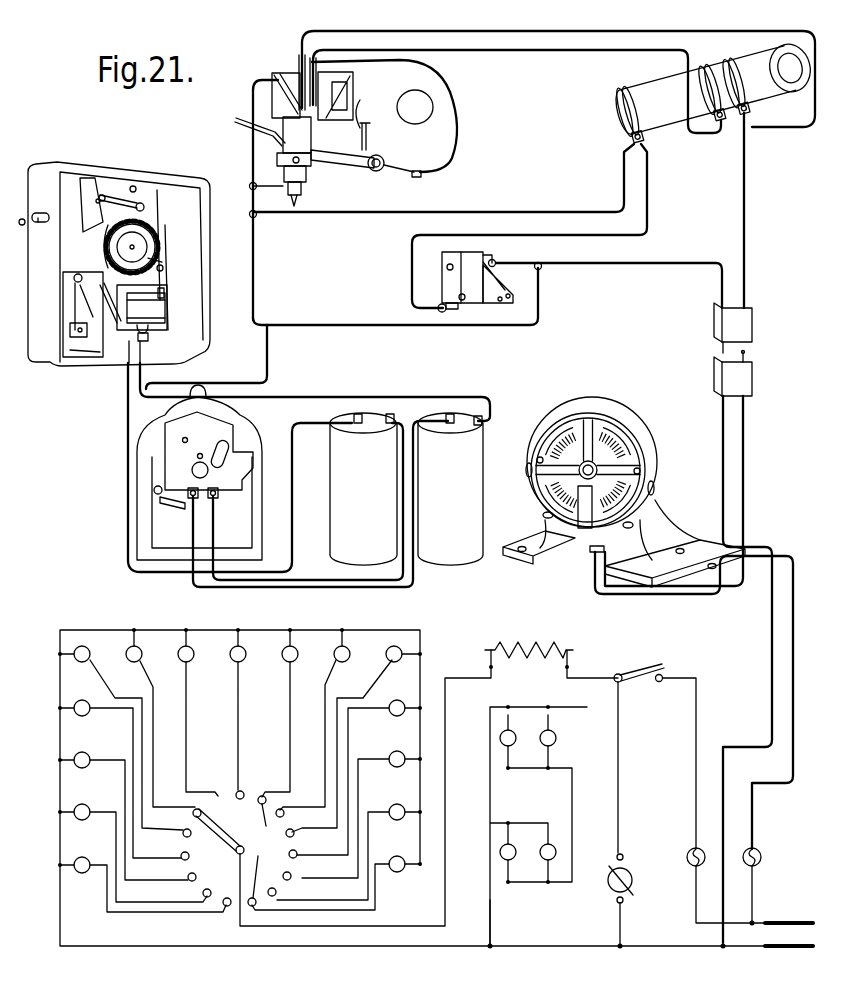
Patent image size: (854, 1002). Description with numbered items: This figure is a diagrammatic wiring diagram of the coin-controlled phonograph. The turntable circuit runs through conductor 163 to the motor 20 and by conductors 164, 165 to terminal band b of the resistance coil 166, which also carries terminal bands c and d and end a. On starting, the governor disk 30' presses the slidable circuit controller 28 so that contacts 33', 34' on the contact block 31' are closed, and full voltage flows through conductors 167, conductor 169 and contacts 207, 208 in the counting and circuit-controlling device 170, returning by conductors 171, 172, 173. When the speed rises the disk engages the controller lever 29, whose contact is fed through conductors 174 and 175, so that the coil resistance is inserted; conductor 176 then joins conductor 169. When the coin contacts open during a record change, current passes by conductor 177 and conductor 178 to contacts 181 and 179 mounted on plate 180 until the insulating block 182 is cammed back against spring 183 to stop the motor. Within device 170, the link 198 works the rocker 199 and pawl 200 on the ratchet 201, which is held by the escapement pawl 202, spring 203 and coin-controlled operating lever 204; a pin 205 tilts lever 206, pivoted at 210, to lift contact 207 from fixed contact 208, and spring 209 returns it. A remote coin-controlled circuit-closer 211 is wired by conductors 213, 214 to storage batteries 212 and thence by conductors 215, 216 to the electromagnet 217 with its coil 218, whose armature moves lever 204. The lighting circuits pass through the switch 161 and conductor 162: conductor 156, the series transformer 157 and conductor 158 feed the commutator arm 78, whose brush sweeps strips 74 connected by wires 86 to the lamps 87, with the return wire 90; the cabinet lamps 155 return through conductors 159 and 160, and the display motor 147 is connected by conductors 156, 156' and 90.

The motor 20 is at (622, 408).
The slidable circuit controller 28 is at (333, 118).
The circuit controller 29 is at (370, 140).
The governor disk 30' is at (373, 111).
The contact block 31' is at (247, 122).
The contact 33' is at (291, 66).
The contact 34' is at (280, 71).
The strips of conducting material 74 is at (282, 834).
The commutator arm 78 is at (221, 841).
The wires 86 is at (325, 727).
The electric lamps 87 is at (241, 660).
The return wire 90 is at (215, 940).
The display motor 147 is at (612, 864).
The electric lamps 155 is at (540, 738).
The conductor 156 is at (642, 767).
The conductor 156' is at (640, 926).
The series transformer 157 is at (517, 645).
The conductor 158 is at (445, 840).
The conductor 159 is at (616, 682).
The conductor 160 is at (491, 912).
The switch 161 is at (657, 683).
The conductor 162 is at (696, 810).
The conductor 163 is at (772, 665).
The conductor 164 is at (743, 495).
The conductor 165 is at (744, 255).
The resistance coil 166 is at (726, 70).
The conductors 167 is at (520, 44).
The conductor 169 is at (253, 100).
The counting and circuit-controlling device 170 is at (192, 330).
The conductor 171 is at (347, 327).
The conductor 172 is at (648, 270).
The conductor 173 is at (720, 448).
The conductor 174 is at (533, 52).
The conductor 175 is at (428, 96).
The conductor 176 is at (280, 185).
The conductor 177 is at (500, 200).
The conductor 178 is at (596, 238).
The contact 179 is at (498, 262).
The plate 180 is at (442, 280).
The contact 181 is at (492, 310).
The insulating block 182 is at (512, 299).
The spring 183 is at (463, 310).
The link 198 is at (32, 224).
The rocker 199 is at (92, 190).
The pawl 200 is at (130, 190).
The ratchet 201 is at (105, 245).
The pawl 202 is at (162, 268).
The spring 203 is at (160, 232).
The coin-controlled operating lever 204 is at (164, 293).
The pin 205 is at (152, 260).
The lever 206 is at (74, 282).
The contact 207 is at (70, 330).
The fixed contact 208 is at (70, 351).
The spring 209 is at (128, 378).
The pivot 210 is at (115, 275).
The coin-controlled circuit-closer 211 is at (235, 455).
The storage batteries 212 is at (415, 478).
The conductor 213 is at (308, 578).
The conductor 214 is at (325, 588).
The conductor 215 is at (356, 398).
The conductor 216 is at (270, 568).
The electromagnet 217 is at (150, 348).
The coil 218 is at (150, 315).
The cylinder end a is at (765, 60).
The terminal band b is at (746, 62).
The terminal band c is at (712, 80).
The clamp d is at (628, 96).